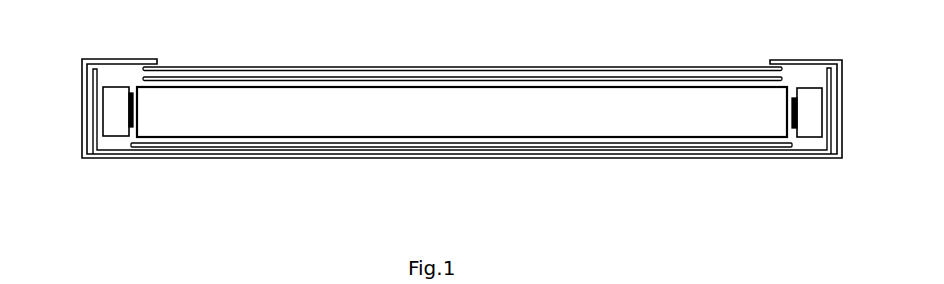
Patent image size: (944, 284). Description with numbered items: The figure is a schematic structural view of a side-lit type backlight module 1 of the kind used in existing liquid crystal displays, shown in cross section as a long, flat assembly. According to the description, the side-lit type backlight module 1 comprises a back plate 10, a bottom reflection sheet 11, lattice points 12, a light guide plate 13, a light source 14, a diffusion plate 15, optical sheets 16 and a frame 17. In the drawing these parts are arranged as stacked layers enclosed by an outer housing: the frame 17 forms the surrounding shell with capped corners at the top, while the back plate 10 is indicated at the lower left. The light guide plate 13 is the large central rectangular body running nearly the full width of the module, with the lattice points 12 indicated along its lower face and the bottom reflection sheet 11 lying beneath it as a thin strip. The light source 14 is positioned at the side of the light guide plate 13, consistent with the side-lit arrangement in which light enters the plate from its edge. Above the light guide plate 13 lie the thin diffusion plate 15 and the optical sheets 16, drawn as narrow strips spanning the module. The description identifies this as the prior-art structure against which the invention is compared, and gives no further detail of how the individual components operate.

The side-lit type backlight module 1 is at (66, 44).
The back plate 10 is at (123, 154).
The bottom reflection sheet 11 is at (283, 147).
The lattice points 12 is at (494, 137).
The light guide plate 13 is at (678, 125).
The light source 14 is at (808, 120).
The diffusion plate 15 is at (710, 77).
The optical sheets 16 is at (508, 67).
The frame 17 is at (118, 62).